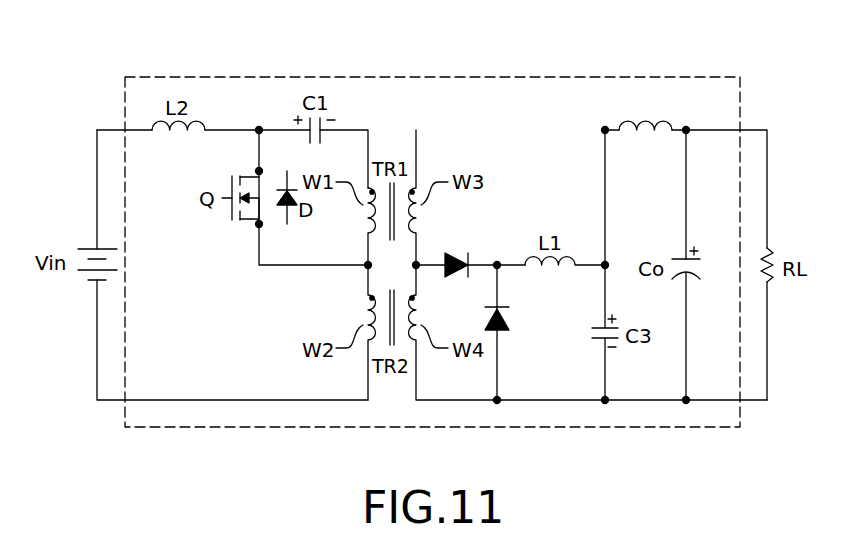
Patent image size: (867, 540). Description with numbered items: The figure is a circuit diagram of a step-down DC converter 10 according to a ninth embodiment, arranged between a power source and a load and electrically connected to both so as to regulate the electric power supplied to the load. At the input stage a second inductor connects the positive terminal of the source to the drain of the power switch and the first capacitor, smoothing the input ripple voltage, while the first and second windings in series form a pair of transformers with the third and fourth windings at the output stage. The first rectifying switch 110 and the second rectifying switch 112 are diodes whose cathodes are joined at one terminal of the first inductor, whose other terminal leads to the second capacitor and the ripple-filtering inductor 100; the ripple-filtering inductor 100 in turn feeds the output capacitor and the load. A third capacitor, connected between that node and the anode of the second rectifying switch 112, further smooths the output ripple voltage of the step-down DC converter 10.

The step-down DC converter 10 is at (433, 77).
The ripple-filtering inductor 100 is at (645, 127).
The first rectifying switch 110 is at (462, 252).
The second rectifying switch 112 is at (512, 318).